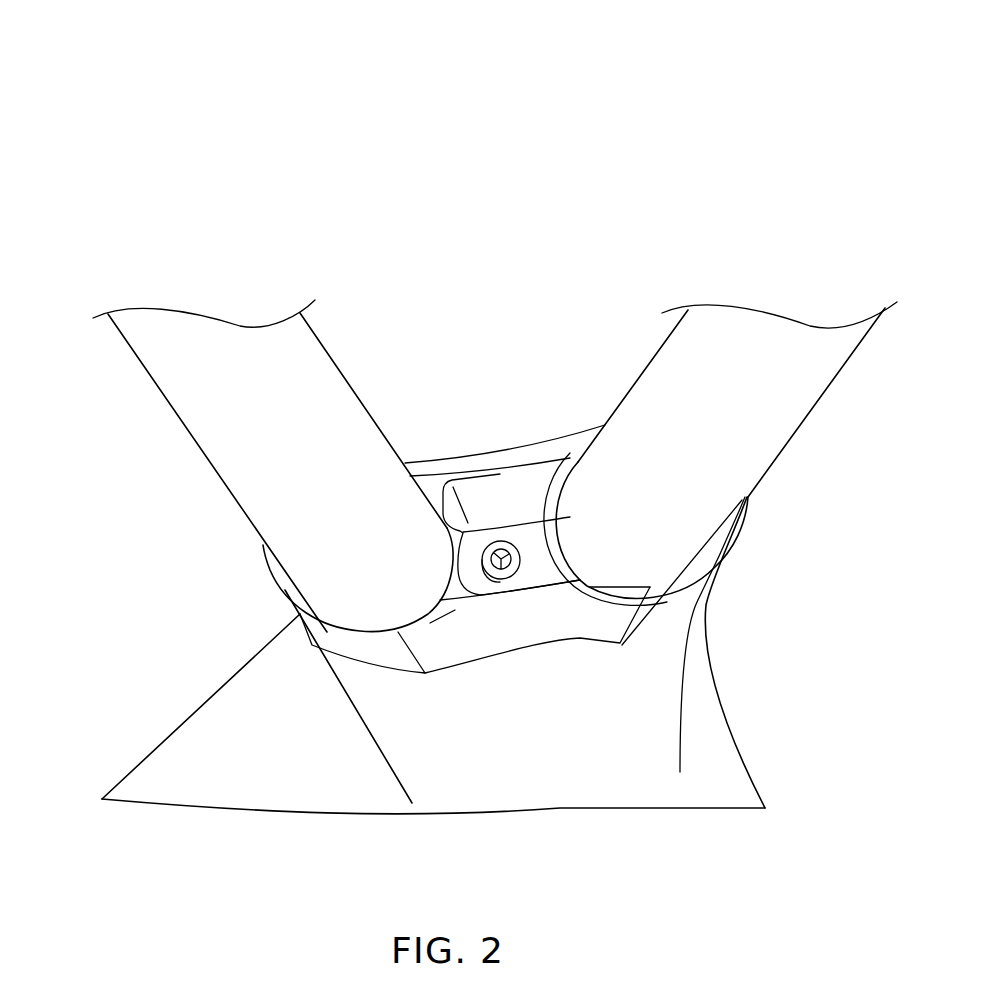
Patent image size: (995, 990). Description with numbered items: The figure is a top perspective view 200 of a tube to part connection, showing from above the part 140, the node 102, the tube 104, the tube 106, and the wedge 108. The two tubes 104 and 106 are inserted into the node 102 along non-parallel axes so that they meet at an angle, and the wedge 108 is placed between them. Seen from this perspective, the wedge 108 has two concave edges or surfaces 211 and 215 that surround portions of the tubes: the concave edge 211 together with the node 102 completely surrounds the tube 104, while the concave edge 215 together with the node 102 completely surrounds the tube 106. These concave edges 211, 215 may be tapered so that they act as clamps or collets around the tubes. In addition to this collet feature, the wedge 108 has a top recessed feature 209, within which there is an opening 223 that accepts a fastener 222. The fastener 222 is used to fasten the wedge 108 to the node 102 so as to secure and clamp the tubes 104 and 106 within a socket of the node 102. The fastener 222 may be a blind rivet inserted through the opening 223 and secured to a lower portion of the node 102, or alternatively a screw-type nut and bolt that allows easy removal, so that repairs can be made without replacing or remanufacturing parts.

The top perspective view 200 is at (313, 114).
The tube 104 is at (213, 415).
The tube 106 is at (748, 348).
The wedge 108 is at (425, 480).
The concave edge 215 is at (570, 453).
The top recessed feature 209 is at (492, 533).
The opening 223 is at (513, 547).
The fastener 222 is at (520, 572).
The node 102 is at (353, 647).
The concave edge 211 is at (455, 610).
The part 140 is at (237, 725).